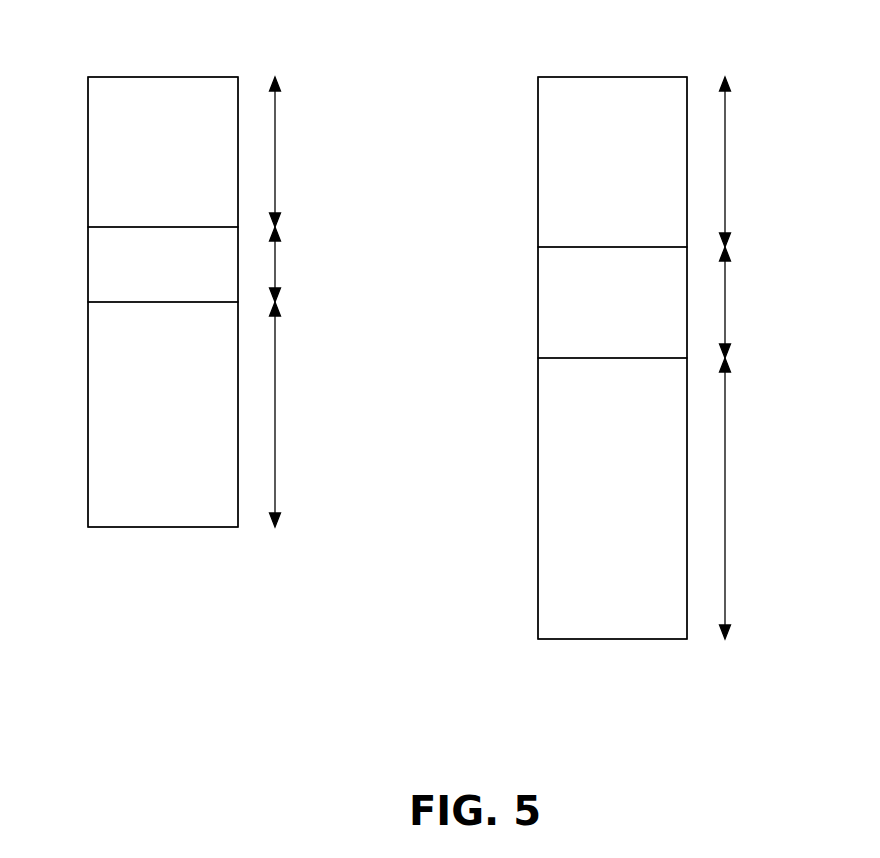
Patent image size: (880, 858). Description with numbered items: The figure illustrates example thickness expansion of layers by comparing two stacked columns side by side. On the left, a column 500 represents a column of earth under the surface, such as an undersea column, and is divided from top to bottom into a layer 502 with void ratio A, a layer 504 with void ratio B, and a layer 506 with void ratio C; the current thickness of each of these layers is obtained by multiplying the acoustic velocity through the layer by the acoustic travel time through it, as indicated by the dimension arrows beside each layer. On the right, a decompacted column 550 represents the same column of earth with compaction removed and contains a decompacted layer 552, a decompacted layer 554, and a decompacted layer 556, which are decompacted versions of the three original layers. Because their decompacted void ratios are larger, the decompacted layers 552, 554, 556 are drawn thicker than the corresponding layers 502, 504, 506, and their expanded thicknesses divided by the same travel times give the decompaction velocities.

The column 500 is at (200, 278).
The layer 502 is at (88, 148).
The layer 504 is at (88, 277).
The layer 506 is at (88, 410).
The decompacted column 550 is at (662, 334).
The decompacted layer 552 is at (538, 155).
The decompacted layer 554 is at (538, 292).
The decompacted layer 556 is at (538, 468).